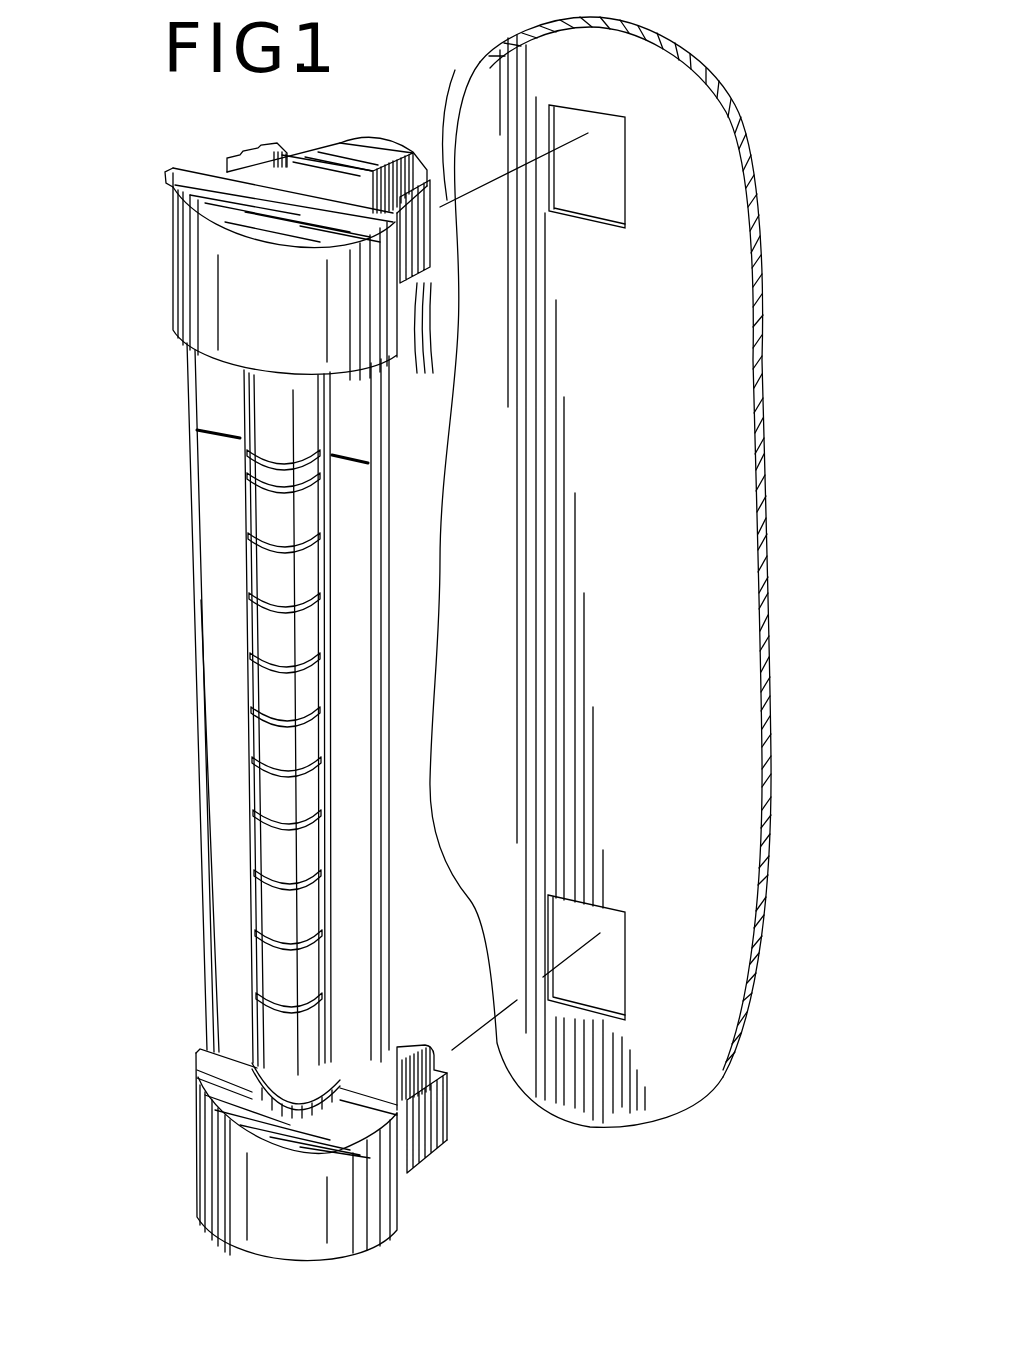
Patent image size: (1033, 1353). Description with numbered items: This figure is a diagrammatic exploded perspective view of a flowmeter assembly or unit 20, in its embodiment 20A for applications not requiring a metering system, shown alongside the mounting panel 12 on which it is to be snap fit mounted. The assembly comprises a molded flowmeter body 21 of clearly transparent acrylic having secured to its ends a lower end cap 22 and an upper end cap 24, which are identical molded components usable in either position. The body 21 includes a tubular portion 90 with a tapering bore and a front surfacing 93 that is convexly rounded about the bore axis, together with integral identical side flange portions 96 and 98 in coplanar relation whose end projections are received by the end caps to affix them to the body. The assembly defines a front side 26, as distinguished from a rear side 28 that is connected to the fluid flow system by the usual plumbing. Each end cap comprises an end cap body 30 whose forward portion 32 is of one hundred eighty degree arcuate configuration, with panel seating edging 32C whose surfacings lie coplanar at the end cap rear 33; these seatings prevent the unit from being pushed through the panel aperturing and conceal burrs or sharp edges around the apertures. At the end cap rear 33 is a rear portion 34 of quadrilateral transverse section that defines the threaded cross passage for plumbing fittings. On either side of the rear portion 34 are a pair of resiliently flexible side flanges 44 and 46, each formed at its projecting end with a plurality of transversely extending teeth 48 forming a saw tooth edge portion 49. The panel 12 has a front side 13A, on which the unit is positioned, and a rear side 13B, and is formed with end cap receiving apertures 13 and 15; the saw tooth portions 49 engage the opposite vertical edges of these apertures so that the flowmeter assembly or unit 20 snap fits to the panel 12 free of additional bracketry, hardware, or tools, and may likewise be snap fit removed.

The panel 12 is at (645, 1110).
The panel end cap receiving aperture 13 is at (598, 172).
The front side of panel 13A is at (737, 672).
The rear side of panel 13B is at (777, 530).
The panel end cap receiving aperture 15 is at (600, 970).
The flowmeter assembly or unit 20 is at (122, 971).
The flowmeter assembly or unit embodiment 20A is at (186, 846).
The flowmeter body 21 is at (212, 518).
The lower end cap 22 is at (268, 1243).
The upper end cap 24 is at (200, 292).
The front side 26 is at (136, 1068).
The rear side 28 is at (387, 108).
The end cap body 30 is at (172, 187).
The forward portion 32 is at (232, 252).
The panel seating edging 32C is at (205, 167).
The end cap rear 33 is at (415, 122).
The rear portion 34 is at (366, 152).
The side flange 44 is at (290, 147).
The side flange 46 is at (462, 119).
The teeth 48 is at (262, 148).
The saw tooth edge portion 49 is at (216, 148).
The tubular portion 90 is at (283, 628).
The front surfacing 93 is at (277, 733).
The side flange portion 96 is at (213, 922).
The side flange portion 98 is at (357, 780).